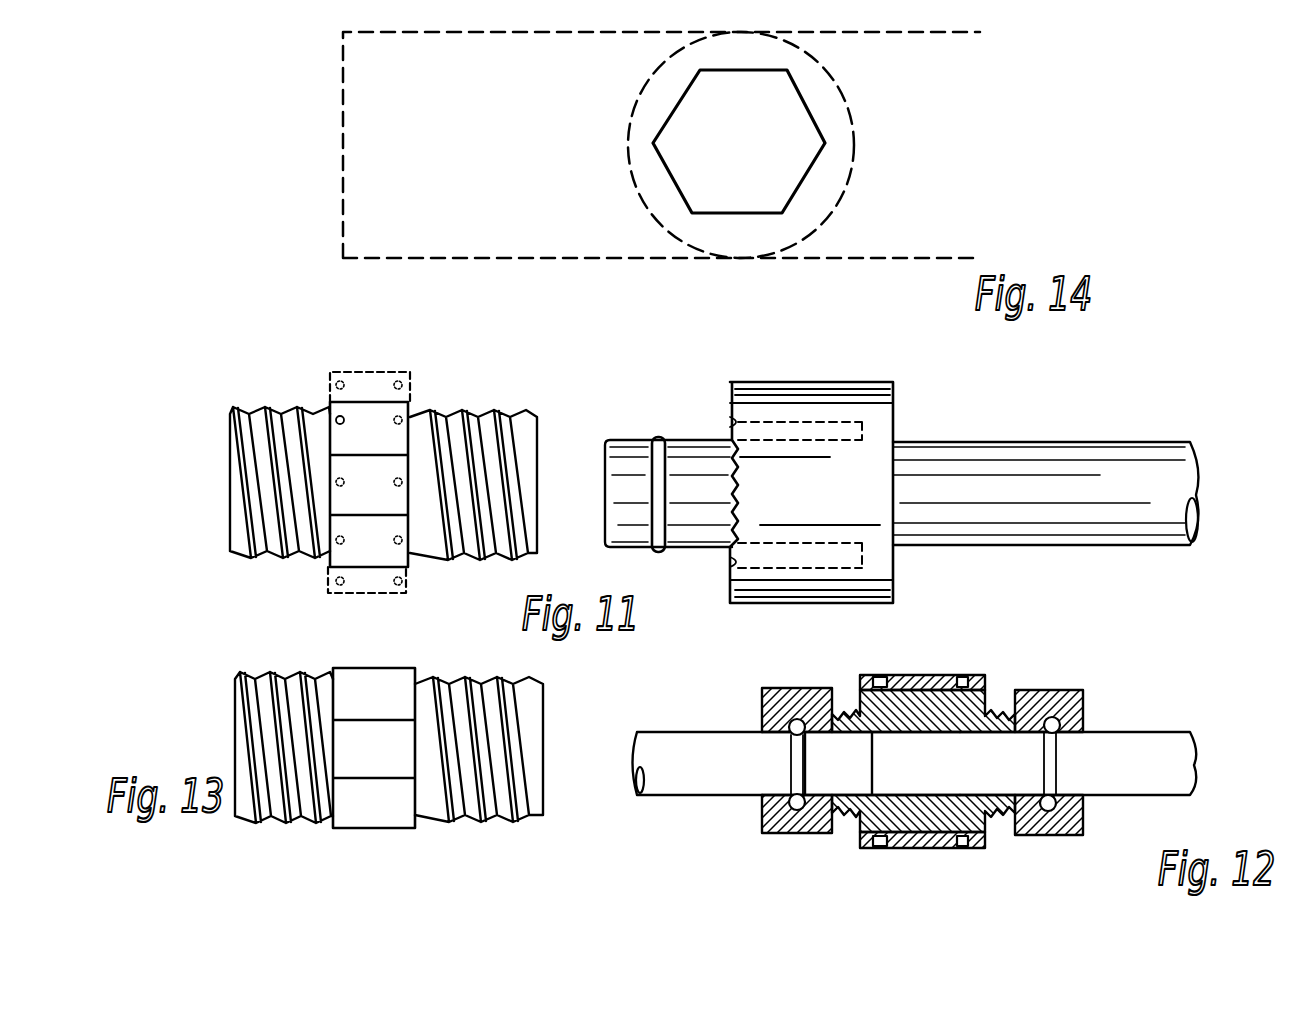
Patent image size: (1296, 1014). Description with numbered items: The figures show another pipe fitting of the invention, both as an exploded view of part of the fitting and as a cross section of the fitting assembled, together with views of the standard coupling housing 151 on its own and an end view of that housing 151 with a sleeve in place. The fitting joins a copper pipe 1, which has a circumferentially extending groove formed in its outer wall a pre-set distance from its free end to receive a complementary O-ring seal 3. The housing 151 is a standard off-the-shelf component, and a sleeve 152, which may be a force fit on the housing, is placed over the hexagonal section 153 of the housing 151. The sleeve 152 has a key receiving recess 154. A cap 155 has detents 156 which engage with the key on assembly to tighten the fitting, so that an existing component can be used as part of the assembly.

In FIG. 11, the pipe 1 is at (1062, 387).
In FIG. 12, the pipe 1 is at (677, 730).
In FIG. 11, the O-ring seal 3 is at (658, 440).
In FIG. 12, the O-ring seal 3 is at (787, 802).
In FIG. 11, the housing 151 is at (383, 483).
In FIG. 13, the housing 151 is at (517, 760).
In FIG. 12, the housing 151 is at (888, 761).
In FIG. 14, the sleeve 152 is at (850, 167).
In FIG. 11, the sleeve 152 is at (413, 383).
In FIG. 14, the hexagonal section 153 is at (693, 187).
In FIG. 11, the hexagonal section 153 is at (369, 484).
In FIG. 13, the hexagonal section 153 is at (372, 685).
In FIG. 12, the hexagonal section 153 is at (860, 813).
In FIG. 11, the key receiving recess 154 is at (338, 422).
In FIG. 12, the key receiving recess 154 is at (880, 675).
In FIG. 12, the cap 155 is at (932, 675).
In FIG. 11, the detents 156 is at (728, 547).